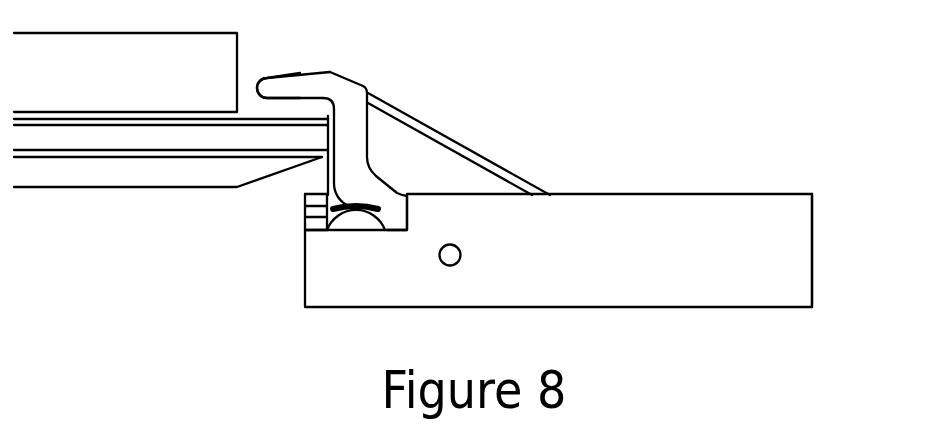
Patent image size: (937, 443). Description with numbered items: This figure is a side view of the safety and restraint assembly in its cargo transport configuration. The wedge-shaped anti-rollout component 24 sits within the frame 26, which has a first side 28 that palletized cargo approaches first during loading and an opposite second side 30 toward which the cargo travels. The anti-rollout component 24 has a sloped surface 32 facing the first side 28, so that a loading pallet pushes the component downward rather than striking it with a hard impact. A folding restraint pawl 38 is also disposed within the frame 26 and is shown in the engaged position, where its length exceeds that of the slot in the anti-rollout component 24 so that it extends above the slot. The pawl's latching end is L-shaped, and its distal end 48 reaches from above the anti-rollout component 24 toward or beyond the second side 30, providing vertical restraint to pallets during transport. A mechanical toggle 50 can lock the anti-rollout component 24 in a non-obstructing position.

The anti-rollout component 24 is at (470, 110).
The frame 26 is at (670, 285).
The first side of the frame 28 is at (812, 247).
The second side of the frame 30 is at (303, 258).
The sloped surface 32 is at (507, 165).
The folding restraint pawl 38 is at (352, 80).
The distal end of the latching end 48 is at (282, 78).
The mechanical toggle 50 is at (363, 220).